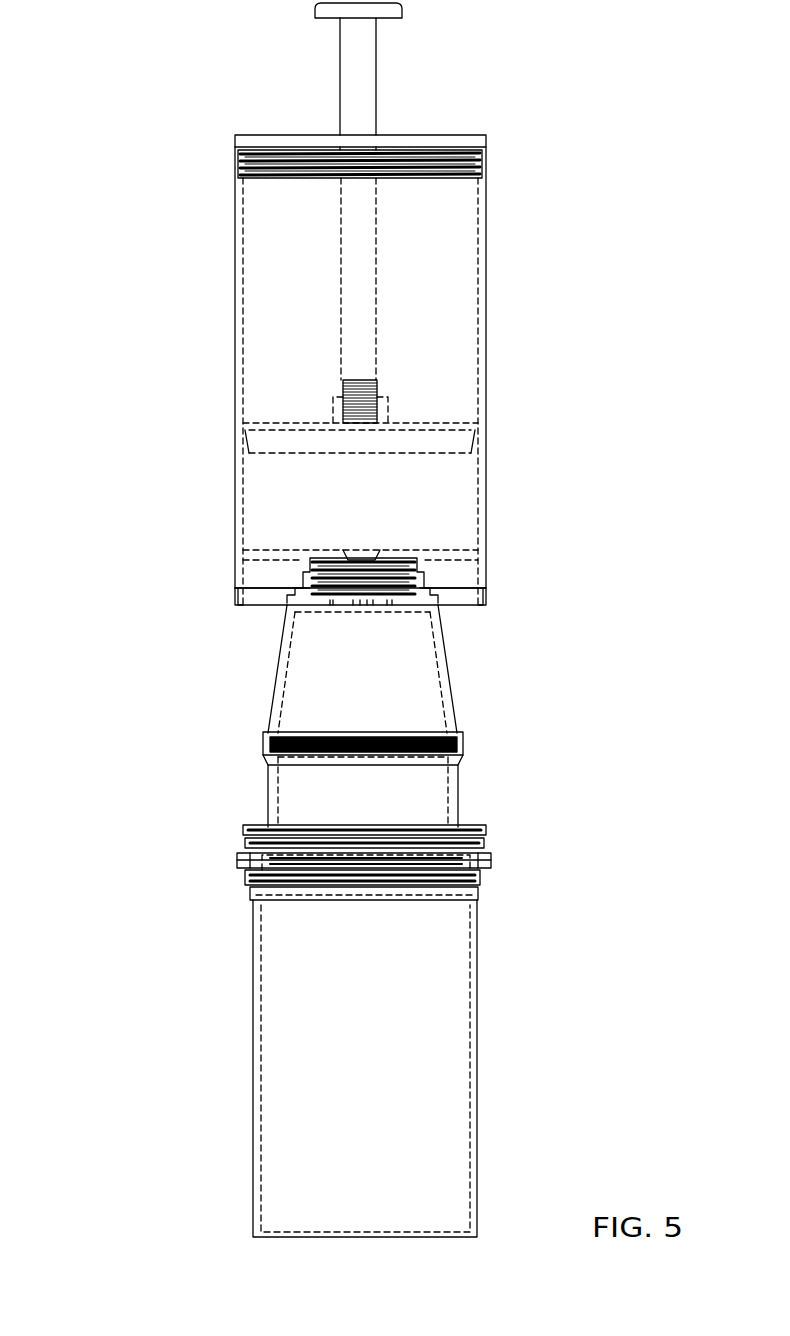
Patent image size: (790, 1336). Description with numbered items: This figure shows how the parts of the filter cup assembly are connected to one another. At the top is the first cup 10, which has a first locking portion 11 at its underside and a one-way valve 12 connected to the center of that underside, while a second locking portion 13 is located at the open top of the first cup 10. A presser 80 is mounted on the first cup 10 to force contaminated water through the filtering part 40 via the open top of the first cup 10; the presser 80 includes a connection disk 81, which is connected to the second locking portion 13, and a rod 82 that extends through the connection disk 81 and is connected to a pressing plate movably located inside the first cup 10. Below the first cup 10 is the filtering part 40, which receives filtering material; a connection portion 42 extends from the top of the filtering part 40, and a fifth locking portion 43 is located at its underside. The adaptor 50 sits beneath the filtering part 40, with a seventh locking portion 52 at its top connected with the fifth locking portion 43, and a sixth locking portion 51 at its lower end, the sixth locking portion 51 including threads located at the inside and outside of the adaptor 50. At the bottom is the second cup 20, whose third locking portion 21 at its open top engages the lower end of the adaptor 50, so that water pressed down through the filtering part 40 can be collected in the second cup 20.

The first cup 10 is at (235, 300).
The first locking portion 11 is at (477, 610).
The one-way valve 12 is at (348, 548).
The second locking portion 13 is at (232, 158).
The second cup 20 is at (305, 1023).
The third locking portion 21 is at (250, 903).
The filtering part 40 is at (430, 693).
The connection portion 42 is at (305, 577).
The fifth locking portion 43 is at (463, 750).
The adaptor 50 is at (430, 805).
The sixth locking portion 51 is at (488, 865).
The seventh locking portion 52 is at (257, 743).
The presser 80 is at (516, 191).
The connection disk 81 is at (460, 142).
The rod 82 is at (368, 62).